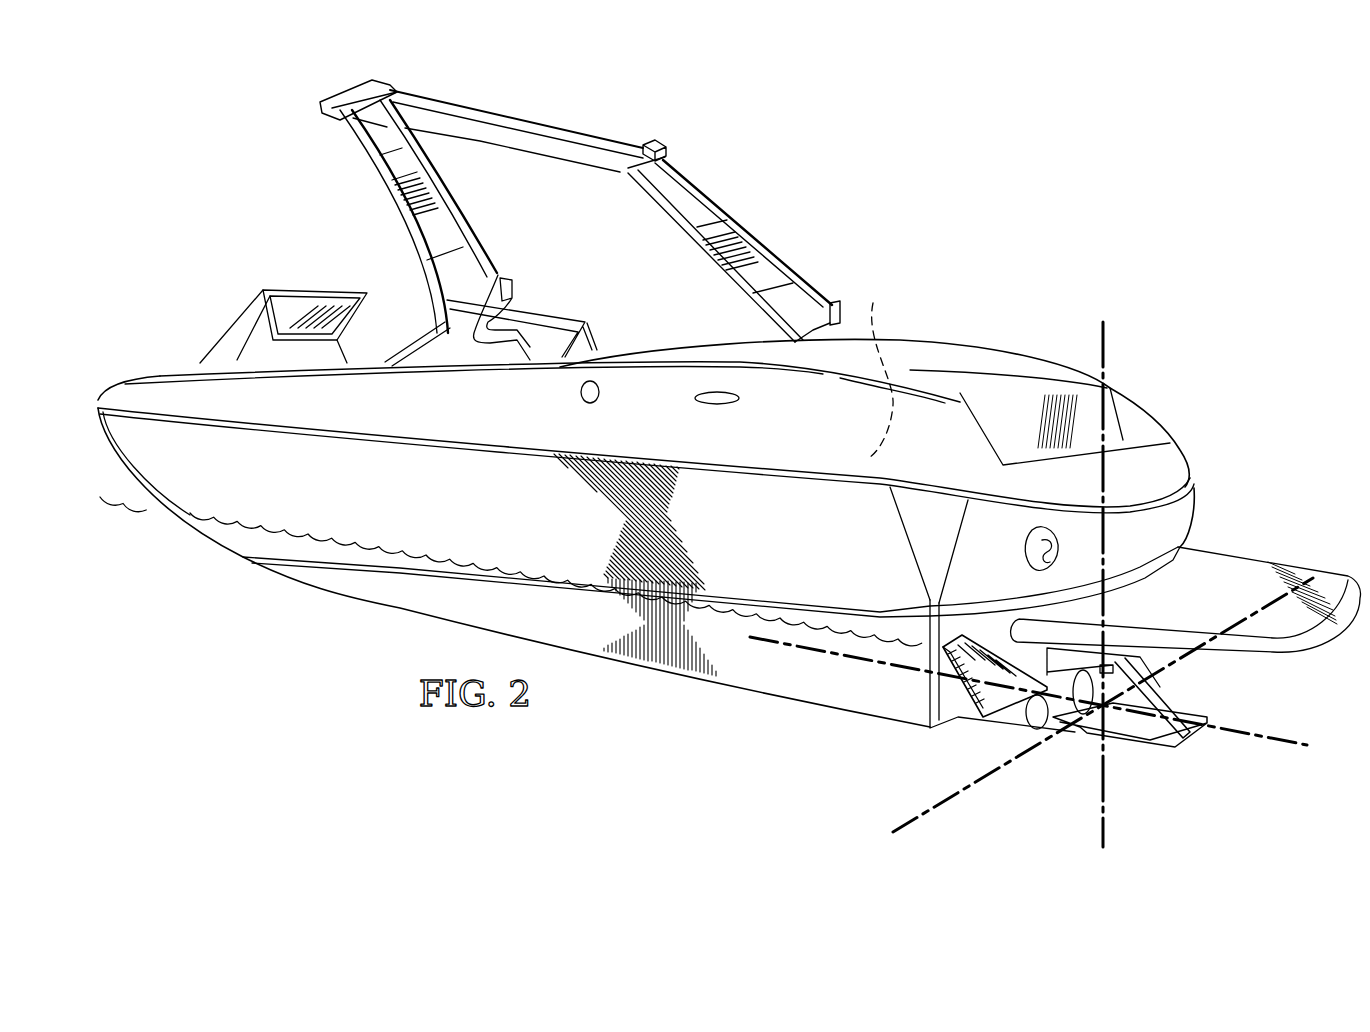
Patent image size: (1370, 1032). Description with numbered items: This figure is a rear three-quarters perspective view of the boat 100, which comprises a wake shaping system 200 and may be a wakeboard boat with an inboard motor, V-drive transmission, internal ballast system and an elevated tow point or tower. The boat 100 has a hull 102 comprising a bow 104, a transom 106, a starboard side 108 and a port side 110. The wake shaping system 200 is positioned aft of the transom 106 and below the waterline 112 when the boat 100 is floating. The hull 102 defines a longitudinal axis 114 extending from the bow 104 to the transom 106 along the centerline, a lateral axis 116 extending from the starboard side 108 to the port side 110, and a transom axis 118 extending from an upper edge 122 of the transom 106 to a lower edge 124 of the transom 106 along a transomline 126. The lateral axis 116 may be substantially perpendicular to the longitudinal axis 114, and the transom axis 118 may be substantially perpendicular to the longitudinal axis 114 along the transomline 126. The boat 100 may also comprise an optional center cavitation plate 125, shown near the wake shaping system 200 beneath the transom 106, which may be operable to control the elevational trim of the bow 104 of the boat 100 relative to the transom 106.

The boat 100 is at (222, 150).
The hull 102 is at (780, 673).
The bow 104 is at (160, 367).
The transom 106 is at (1167, 527).
The starboard side 108 is at (873, 367).
The port side 110 is at (775, 503).
The waterline 112 is at (357, 548).
The longitudinal axis 114 is at (1293, 743).
The lateral axis 116 is at (903, 830).
The transom axis 118 is at (1103, 828).
The upper edge 122 is at (1167, 487).
The lower edge 124 is at (1076, 736).
The center cavitation plate 125 is at (1197, 747).
The transomline 126 is at (1007, 550).
The wake shaping system 200 is at (998, 713).